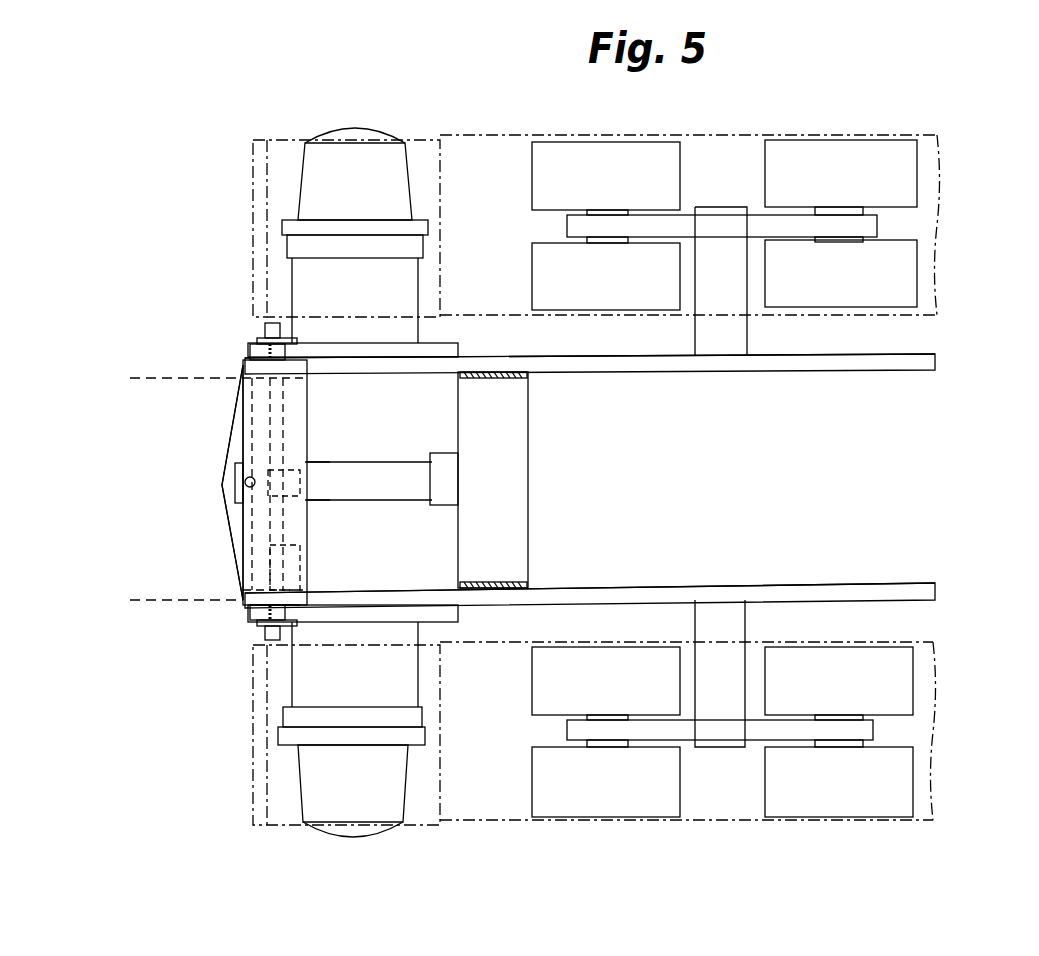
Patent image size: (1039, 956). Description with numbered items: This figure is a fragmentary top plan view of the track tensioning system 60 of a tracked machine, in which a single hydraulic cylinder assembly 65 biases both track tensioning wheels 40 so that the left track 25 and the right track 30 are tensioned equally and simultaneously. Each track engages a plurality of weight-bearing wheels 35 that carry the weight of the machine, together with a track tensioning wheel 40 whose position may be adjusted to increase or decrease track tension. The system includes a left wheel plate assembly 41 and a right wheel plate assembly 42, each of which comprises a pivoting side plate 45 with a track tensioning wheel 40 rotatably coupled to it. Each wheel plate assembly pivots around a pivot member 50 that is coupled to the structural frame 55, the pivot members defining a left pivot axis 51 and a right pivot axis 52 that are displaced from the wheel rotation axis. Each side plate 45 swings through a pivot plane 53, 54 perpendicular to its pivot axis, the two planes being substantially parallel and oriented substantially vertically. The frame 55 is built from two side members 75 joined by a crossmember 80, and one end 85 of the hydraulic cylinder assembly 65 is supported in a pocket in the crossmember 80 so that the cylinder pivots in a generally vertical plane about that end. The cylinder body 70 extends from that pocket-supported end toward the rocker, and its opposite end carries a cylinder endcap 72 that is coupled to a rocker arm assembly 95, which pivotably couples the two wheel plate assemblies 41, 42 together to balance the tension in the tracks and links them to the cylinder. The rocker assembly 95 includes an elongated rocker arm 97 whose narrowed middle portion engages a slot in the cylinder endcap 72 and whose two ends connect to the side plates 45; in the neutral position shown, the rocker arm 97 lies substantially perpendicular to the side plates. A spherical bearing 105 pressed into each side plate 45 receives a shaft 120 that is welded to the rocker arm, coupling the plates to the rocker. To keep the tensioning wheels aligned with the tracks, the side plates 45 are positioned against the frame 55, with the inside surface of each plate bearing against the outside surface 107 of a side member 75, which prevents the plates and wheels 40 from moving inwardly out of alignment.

The left track 25 is at (937, 150).
The right track 30 is at (917, 818).
The weight-bearing wheels 35 is at (680, 160).
The track tensioning wheel 40 is at (440, 168).
The left wheel plate assembly 41 is at (224, 357).
The right wheel plate assembly 42 is at (239, 632).
The pivoting side plate 45 is at (358, 343).
The pivot member 50 is at (257, 340).
The left pivot axis 51 is at (268, 188).
The right pivot axis 52 is at (268, 732).
The left pivot plane 53 is at (200, 380).
The right pivot plane 54 is at (160, 605).
The structural frame 55 is at (690, 585).
The track tensioning system 60 is at (190, 482).
The hydraulic cylinder assembly 65 is at (340, 462).
The shaft 70 is at (388, 462).
The cylinder endcap 72 is at (230, 472).
The side member 75 is at (817, 373).
The crossmember 80 is at (528, 470).
The end of hydraulic cylinder assembly 85 is at (450, 453).
The rocker arm assembly 95 is at (215, 527).
The rocker arm 97 is at (225, 495).
The spherical bearing 105 is at (305, 575).
The outside surface 107 is at (905, 355).
The shaft 120 is at (300, 600).